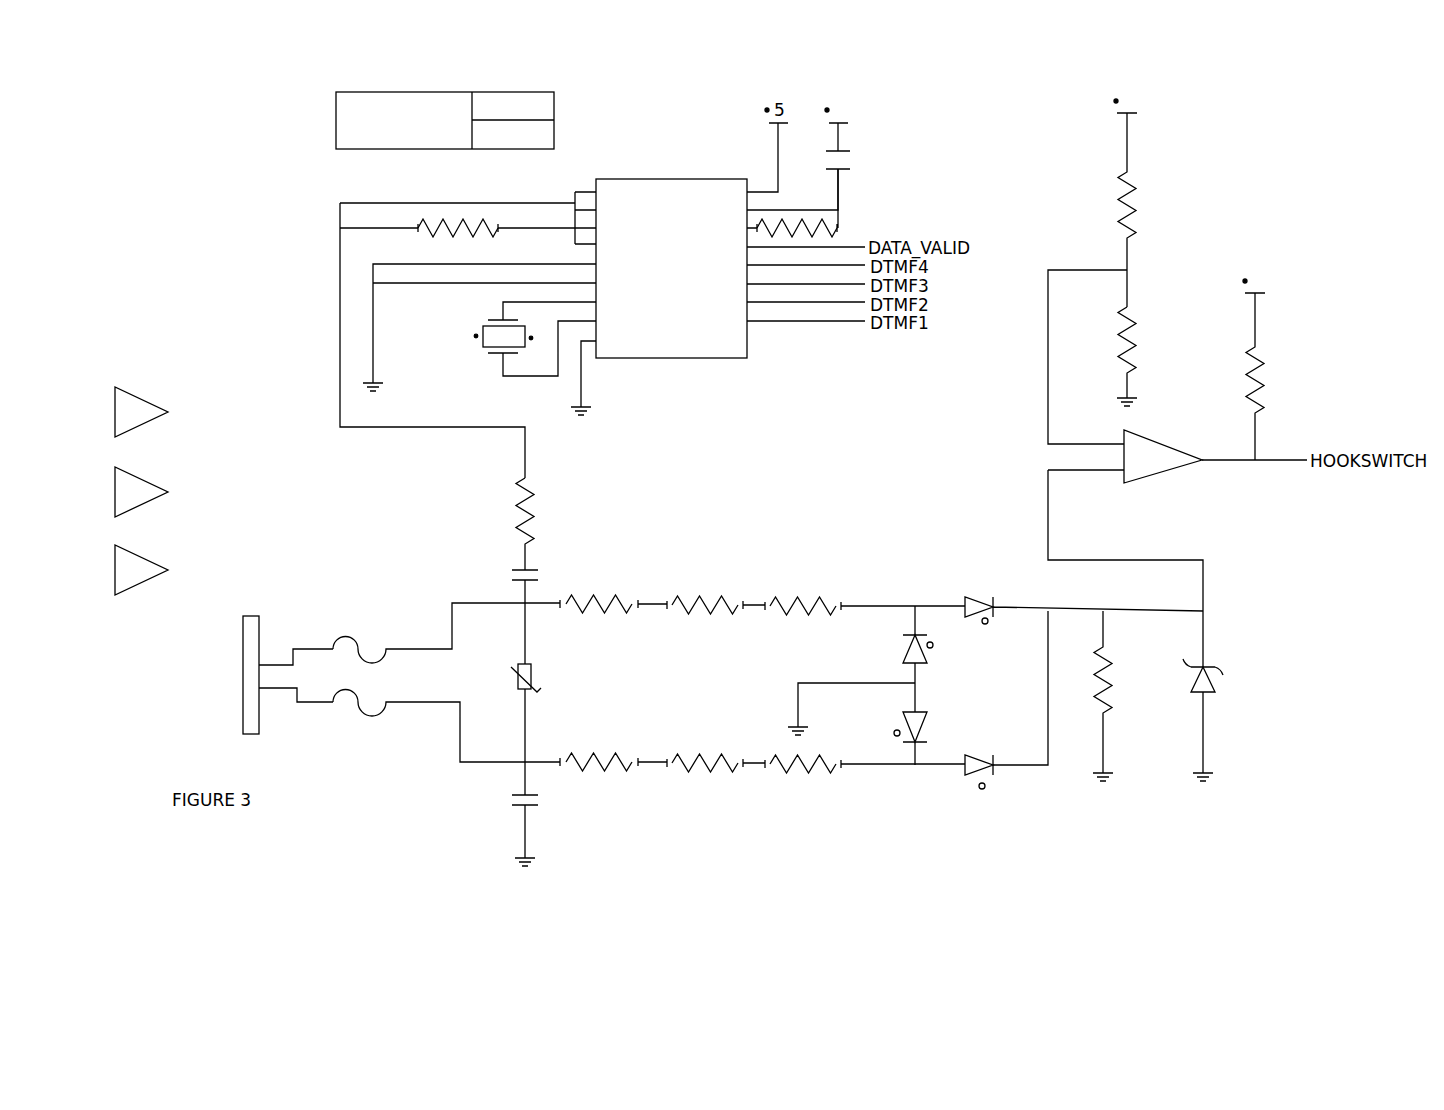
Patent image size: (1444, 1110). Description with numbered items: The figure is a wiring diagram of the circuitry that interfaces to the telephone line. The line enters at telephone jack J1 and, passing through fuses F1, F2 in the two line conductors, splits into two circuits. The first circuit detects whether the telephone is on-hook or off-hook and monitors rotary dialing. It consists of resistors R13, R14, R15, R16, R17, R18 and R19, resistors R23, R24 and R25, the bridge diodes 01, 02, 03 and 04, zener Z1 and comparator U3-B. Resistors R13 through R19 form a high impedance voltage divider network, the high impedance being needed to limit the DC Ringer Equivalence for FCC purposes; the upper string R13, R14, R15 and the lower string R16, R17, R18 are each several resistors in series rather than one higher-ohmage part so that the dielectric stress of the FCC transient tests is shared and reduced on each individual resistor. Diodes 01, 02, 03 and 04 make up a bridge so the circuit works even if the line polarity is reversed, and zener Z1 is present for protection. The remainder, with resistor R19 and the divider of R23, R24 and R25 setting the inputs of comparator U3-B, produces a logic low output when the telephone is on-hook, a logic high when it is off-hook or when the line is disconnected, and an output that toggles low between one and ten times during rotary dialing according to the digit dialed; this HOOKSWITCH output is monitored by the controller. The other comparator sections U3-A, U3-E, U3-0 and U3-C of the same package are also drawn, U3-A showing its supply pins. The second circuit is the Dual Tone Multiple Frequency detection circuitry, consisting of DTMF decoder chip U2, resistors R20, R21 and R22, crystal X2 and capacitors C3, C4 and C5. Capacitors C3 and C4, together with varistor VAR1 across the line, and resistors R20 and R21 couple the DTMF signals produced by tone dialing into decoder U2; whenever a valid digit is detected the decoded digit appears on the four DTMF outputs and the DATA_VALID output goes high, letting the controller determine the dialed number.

The comparator U3 power pins table U3-A is at (462, 121).
The comparator U3-E is at (162, 420).
The comparator U3-D U3-0 is at (166, 500).
The comparator U3-C is at (171, 578).
The comparator U3-B is at (1207, 468).
The DTMF decoder chip U2 is at (659, 298).
The crystal X2 is at (493, 353).
The resistor R21 is at (468, 198).
The resistor R22 is at (828, 205).
The capacitor C5 is at (830, 155).
The telephone jack J1 is at (232, 676).
The fuse 250 MA F1 is at (427, 623).
The fuse 250 MA F2 is at (424, 726).
The resistor R20 is at (556, 519).
The capacitor C3 is at (489, 567).
The varistor V220MA4B VAR1 is at (573, 682).
The capacitor C4 is at (481, 814).
The resistor R13 is at (596, 581).
The resistor R14 is at (716, 582).
The resistor R15 is at (865, 582).
The resistor R16 is at (596, 789).
The resistor R17 is at (716, 788).
The resistor R18 is at (865, 790).
The diode 01 is at (876, 644).
The diode 02 is at (873, 724).
The diode 03 is at (1076, 588).
The diode 04 is at (1004, 700).
The resistor R19 is at (1127, 696).
The zener Z1 is at (1232, 696).
The resistor R23 is at (1153, 356).
The resistor R24 is at (1151, 199).
The resistor R25 is at (1285, 365).